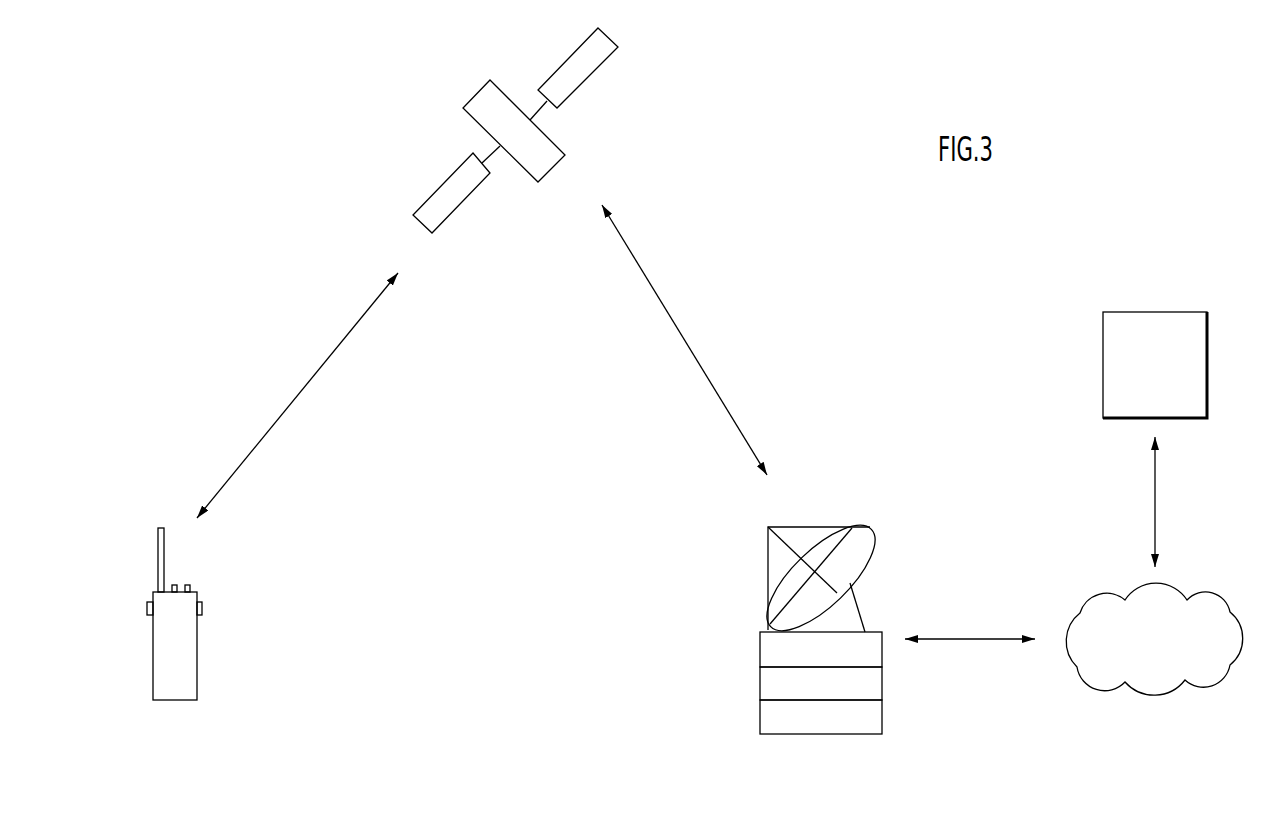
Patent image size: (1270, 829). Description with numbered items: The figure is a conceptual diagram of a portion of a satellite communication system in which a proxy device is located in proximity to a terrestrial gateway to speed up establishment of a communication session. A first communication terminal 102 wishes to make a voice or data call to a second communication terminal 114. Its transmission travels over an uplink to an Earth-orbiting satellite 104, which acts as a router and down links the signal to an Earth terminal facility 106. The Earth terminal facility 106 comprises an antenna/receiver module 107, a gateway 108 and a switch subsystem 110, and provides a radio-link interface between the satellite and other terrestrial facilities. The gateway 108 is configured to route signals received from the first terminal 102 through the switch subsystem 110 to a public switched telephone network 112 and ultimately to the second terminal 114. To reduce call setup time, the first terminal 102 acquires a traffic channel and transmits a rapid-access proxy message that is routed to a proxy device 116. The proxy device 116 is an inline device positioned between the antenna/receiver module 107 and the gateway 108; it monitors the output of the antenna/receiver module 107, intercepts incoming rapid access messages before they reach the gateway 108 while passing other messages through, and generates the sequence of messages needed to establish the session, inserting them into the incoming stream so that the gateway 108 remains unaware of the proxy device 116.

The first communication terminal 102 is at (197, 645).
The satellite 104 is at (558, 148).
The Earth terminal facility 106 is at (816, 615).
The antenna/receiver module 107 is at (890, 488).
The gateway 108 is at (760, 682).
The switch subsystem 110 is at (760, 717).
The public switched telephone network (PSTN) 112 is at (1227, 608).
The second communication terminal 114 is at (1142, 373).
The proxy device 116 is at (760, 645).